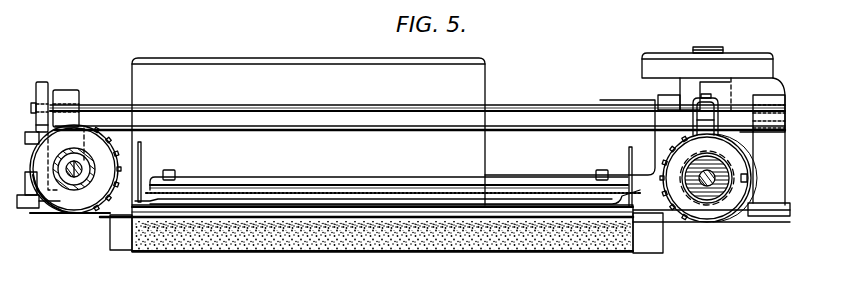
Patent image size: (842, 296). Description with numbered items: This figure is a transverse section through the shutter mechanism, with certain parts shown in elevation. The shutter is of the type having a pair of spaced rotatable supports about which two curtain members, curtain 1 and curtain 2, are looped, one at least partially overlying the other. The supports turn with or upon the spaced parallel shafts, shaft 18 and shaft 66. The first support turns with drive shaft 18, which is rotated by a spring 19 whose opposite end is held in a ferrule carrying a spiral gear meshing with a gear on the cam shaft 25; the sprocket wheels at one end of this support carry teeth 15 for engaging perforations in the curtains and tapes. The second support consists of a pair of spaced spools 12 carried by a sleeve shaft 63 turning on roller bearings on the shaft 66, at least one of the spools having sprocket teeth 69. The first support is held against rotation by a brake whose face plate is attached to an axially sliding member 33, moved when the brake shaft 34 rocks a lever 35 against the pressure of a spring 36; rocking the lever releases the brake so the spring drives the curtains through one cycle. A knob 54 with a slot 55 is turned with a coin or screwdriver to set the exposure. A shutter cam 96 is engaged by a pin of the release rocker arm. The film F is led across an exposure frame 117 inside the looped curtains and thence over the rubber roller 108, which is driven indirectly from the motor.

The curtain 1 is at (547, 130).
The curtain 2 is at (328, 131).
The spools 12 is at (79, 186).
The teeth 15 is at (672, 213).
The shaft 18 is at (706, 197).
The spring 19 is at (693, 207).
The cam shaft 25 is at (498, 113).
The axially sliding member 33 is at (718, 213).
The brake shaft 34 is at (589, 112).
The lever 35 is at (690, 127).
The spring 36 is at (717, 205).
The knob 54 is at (717, 47).
The slot 55 is at (722, 48).
The sleeve shaft 63 is at (88, 190).
The shaft 66 is at (74, 180).
The sprocket teeth 69 is at (60, 209).
The shutter cam 96 is at (42, 88).
The rubber roller 108 is at (570, 258).
The exposure frame 117 is at (142, 195).
The film F is at (522, 202).